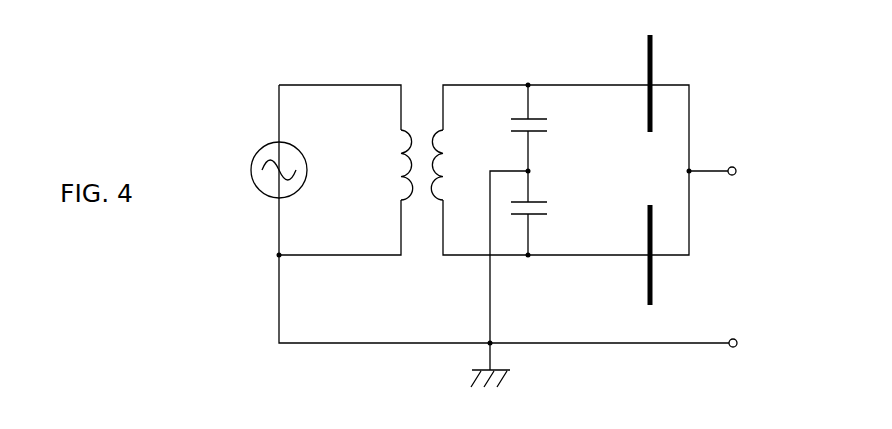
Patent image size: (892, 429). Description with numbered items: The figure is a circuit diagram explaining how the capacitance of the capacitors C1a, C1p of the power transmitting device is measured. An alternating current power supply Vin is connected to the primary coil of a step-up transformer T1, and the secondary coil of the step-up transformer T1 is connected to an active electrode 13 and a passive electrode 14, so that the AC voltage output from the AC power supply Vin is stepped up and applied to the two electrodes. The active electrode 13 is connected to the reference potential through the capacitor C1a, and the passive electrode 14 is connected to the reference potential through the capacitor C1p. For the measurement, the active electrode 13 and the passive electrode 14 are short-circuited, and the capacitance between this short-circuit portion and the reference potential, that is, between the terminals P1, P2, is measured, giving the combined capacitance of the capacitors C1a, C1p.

The active electrode 13 is at (653, 55).
The passive electrode 14 is at (653, 277).
The step-up transformer T1 is at (419, 76).
The AC power supply Vin is at (258, 151).
The capacitor C1a is at (539, 115).
The capacitor C1p is at (539, 198).
The terminal P1 is at (726, 172).
The terminal P2 is at (746, 345).